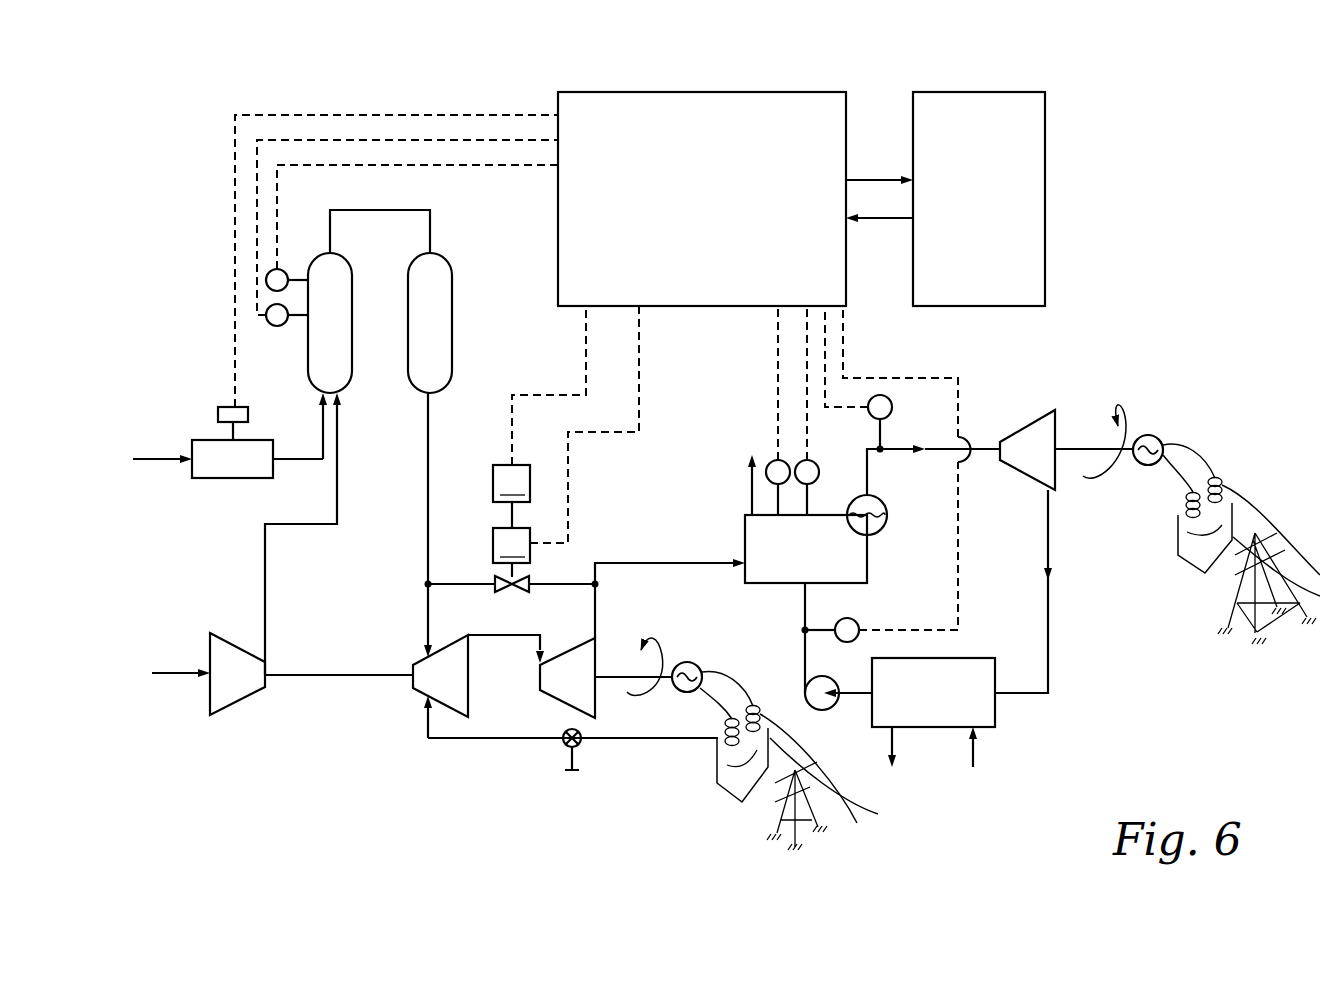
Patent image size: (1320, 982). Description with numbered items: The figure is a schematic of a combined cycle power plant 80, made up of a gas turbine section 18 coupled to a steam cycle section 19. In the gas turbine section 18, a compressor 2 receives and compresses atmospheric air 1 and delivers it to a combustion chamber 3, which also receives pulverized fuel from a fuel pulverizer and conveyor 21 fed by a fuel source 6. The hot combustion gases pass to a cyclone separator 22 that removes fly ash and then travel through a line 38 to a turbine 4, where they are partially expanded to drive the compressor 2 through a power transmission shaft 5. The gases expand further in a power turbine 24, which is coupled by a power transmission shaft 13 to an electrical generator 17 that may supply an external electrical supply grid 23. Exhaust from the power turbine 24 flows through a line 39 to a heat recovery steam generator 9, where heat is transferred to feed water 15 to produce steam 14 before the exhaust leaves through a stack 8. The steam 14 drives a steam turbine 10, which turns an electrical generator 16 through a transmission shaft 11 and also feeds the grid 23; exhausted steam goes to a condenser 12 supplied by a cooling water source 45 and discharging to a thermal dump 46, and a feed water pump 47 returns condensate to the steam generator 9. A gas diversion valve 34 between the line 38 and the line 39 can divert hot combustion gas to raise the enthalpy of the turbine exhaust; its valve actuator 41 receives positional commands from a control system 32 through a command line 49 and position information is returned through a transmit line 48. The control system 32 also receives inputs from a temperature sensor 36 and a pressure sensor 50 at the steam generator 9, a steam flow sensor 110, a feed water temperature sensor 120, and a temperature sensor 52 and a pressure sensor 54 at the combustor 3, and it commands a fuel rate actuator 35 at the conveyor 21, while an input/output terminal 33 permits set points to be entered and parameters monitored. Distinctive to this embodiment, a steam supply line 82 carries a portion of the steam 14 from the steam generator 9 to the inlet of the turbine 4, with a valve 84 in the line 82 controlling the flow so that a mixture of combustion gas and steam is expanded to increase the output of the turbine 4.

The atmospheric air 1 is at (178, 671).
The compressor 2 is at (243, 686).
The combustion chamber 3 is at (338, 331).
The turbine 4 is at (455, 686).
The power transmission shaft 5 is at (305, 677).
The fuel source 6 is at (156, 457).
The stack 8 is at (752, 484).
The heat recovery steam generator 9 is at (816, 561).
The steam turbine 10 is at (1048, 461).
The transmission shaft 11 is at (1076, 449).
The condenser 12 is at (947, 701).
The power transmission shaft 13 is at (612, 676).
The steam 14 is at (881, 496).
The feed water 15 is at (880, 534).
The electrical generator 16 is at (1148, 434).
The electrical generator 17 is at (700, 666).
The gas turbine section 18 is at (217, 543).
The steam cycle section 19 is at (1082, 337).
The fuel pulverizer and conveyor 21 is at (247, 470).
The cyclone separator 22 is at (444, 331).
The external electrical supply grid 23 is at (1205, 437).
The power turbine 24 is at (584, 686).
The control system 32 is at (722, 209).
The input/output terminal 33 is at (996, 211).
The gas diversion valve 34 is at (580, 512).
The fuel rate actuator 35 is at (226, 406).
The temperature sensor 36 is at (818, 463).
The line 38 is at (428, 443).
The line 39 is at (596, 589).
The valve actuator 41 is at (511, 552).
The cooling water source 45 is at (972, 762).
The thermal dump 46 is at (890, 762).
The feed water pump 47 is at (834, 706).
The transmit line 48 is at (512, 412).
The command line 49 is at (568, 458).
The pressure sensor 50 is at (767, 463).
The temperature sensor 52 is at (270, 326).
The pressure sensor 54 is at (284, 272).
The combined cycle power plant 80 is at (1212, 168).
The steam supply line 82 is at (480, 739).
The valve 84 is at (580, 745).
The steam flow sensor 110 is at (892, 407).
The feed water temperature sensor 120 is at (850, 618).